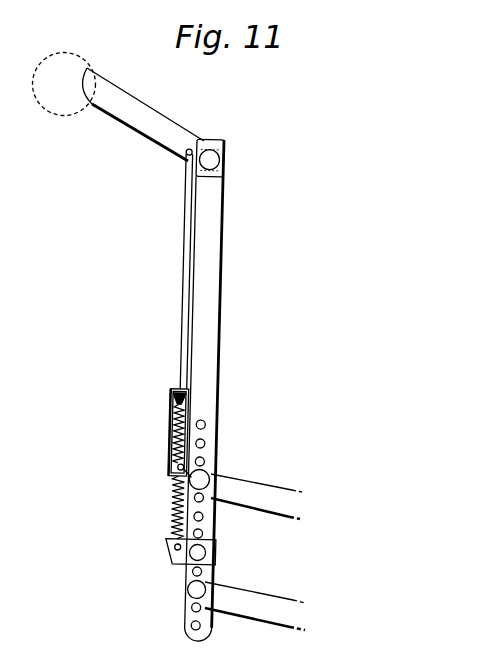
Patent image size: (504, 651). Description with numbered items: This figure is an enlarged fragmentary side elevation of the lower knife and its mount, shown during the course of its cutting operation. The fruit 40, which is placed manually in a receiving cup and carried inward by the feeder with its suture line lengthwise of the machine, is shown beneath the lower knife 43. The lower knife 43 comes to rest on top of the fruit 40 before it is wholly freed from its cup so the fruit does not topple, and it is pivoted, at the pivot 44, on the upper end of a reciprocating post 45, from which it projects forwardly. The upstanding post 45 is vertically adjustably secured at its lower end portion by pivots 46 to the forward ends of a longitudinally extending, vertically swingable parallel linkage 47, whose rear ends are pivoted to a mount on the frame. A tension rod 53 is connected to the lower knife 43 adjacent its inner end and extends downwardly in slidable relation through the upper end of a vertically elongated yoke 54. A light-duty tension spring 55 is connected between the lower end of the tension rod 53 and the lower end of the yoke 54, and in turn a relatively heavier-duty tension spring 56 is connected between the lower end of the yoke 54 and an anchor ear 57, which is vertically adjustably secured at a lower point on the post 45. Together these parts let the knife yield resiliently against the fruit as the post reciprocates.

The fruit 40 is at (46, 111).
The lower knife 43 is at (138, 123).
The pivot 44 is at (213, 160).
The reciprocating post 45 is at (210, 345).
The pivots 46 is at (211, 477).
The parallel linkage 47 is at (258, 500).
The tension rod 53 is at (187, 258).
The yoke 54 is at (176, 423).
The light-duty tension spring 55 is at (195, 424).
The heavier-duty tension spring 56 is at (181, 509).
The anchor ear 57 is at (180, 552).